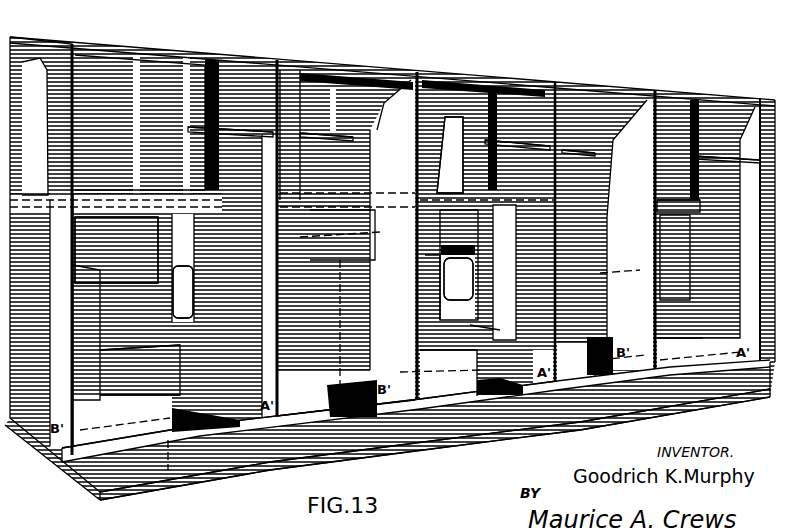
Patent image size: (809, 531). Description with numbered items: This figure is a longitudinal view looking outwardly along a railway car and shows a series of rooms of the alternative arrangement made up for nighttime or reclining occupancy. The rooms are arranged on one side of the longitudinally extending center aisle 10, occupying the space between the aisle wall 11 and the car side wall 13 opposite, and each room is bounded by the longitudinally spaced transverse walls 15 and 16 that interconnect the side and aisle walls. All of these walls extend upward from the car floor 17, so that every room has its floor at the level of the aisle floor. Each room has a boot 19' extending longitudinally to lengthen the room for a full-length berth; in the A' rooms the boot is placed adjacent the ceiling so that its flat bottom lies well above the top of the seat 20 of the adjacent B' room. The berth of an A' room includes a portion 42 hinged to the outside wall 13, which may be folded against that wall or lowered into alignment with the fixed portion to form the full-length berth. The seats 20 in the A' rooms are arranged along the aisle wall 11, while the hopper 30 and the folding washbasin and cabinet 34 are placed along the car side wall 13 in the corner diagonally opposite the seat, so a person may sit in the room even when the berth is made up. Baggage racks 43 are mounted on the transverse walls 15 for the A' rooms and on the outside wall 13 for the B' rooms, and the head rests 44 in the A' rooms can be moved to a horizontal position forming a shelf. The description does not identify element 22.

The transverse wall 15 is at (68, 62).
The boot 19' is at (405, 121).
The transverse wall 16 is at (415, 76).
The car side wall 13 is at (140, 122).
The baggage rack 43 is at (240, 130).
The hinged berth portion 42 is at (734, 209).
The wall panel 22 is at (88, 240).
The head rest 44 is at (428, 263).
The folding washbasin and cabinet 34 is at (188, 333).
The hopper 30 is at (162, 355).
The seat 20 is at (160, 382).
The car floor 17 is at (62, 462).
The center aisle 10 is at (483, 423).
The aisle wall 11 is at (588, 390).